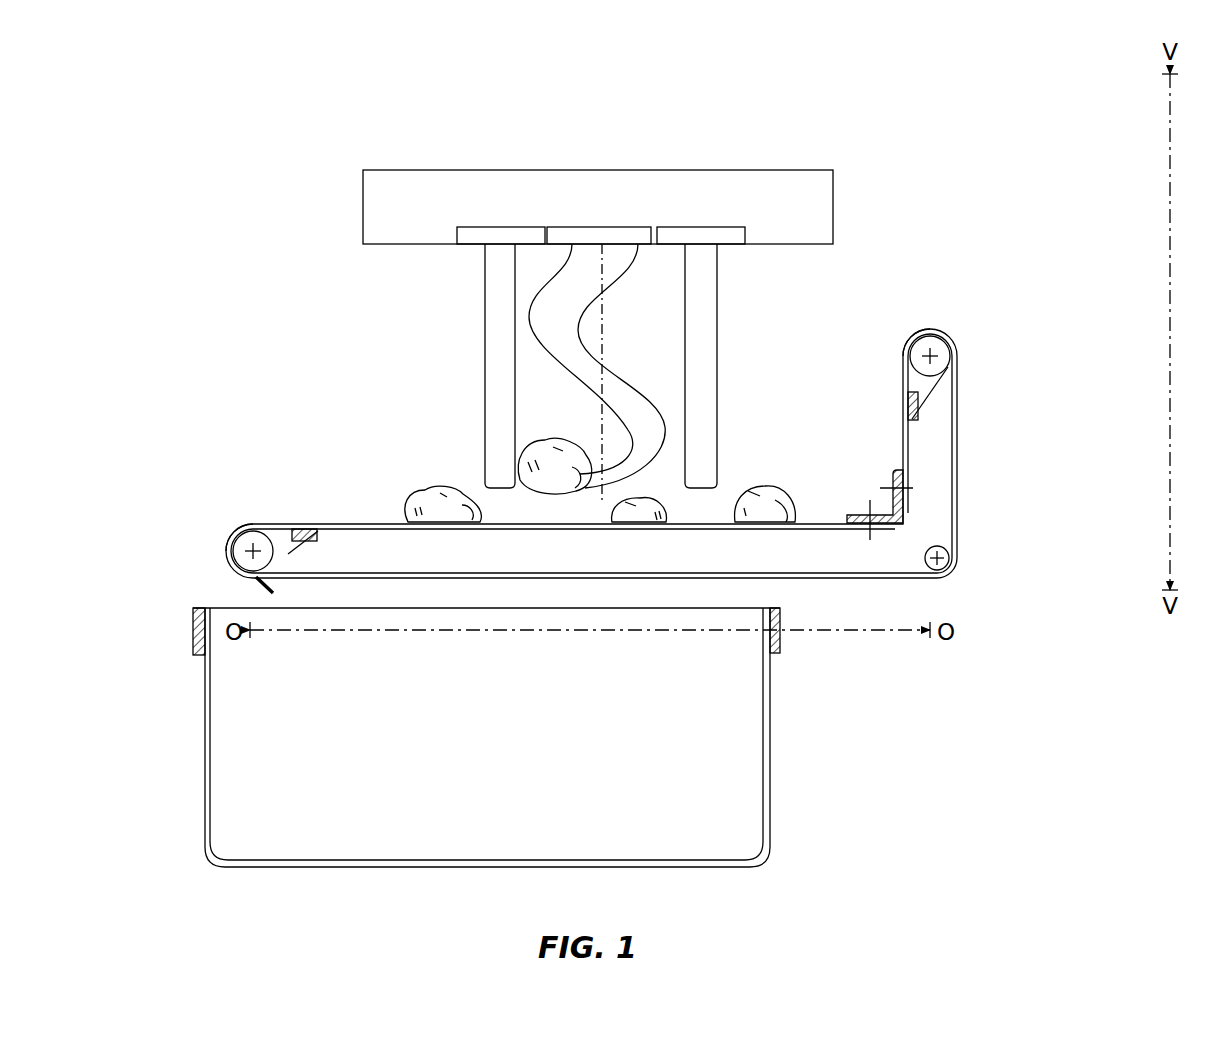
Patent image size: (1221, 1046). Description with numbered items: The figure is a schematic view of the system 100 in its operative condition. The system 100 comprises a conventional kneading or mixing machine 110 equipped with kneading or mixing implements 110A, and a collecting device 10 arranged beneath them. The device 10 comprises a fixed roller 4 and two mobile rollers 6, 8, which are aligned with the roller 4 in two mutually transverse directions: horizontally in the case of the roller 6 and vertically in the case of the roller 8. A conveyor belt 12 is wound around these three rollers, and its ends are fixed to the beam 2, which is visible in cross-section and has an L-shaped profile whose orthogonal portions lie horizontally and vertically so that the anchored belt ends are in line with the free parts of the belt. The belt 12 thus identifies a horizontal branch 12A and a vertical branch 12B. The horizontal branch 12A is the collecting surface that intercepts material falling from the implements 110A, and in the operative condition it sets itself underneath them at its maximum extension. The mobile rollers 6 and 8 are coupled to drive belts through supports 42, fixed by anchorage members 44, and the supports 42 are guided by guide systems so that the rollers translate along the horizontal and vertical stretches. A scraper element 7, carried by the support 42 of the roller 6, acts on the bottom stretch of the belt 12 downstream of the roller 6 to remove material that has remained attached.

The system 100 is at (310, 255).
The kneading or mixing machine 110 is at (841, 233).
The kneading or mixing implements 110A is at (542, 353).
The collecting device 10 is at (165, 429).
The conveyor belt 12 is at (383, 523).
The horizontal branch 12A is at (218, 556).
The vertical branch 12B is at (961, 345).
The mobile roller 6 is at (233, 533).
The mobile roller 8 is at (908, 333).
The scraper element 7 is at (260, 583).
The anchorage members 44 is at (336, 529).
The supports 42 is at (290, 551).
The beam 2 is at (846, 513).
The fixed roller 4 is at (950, 570).